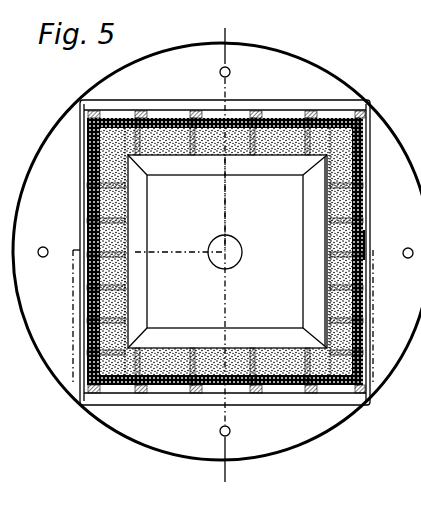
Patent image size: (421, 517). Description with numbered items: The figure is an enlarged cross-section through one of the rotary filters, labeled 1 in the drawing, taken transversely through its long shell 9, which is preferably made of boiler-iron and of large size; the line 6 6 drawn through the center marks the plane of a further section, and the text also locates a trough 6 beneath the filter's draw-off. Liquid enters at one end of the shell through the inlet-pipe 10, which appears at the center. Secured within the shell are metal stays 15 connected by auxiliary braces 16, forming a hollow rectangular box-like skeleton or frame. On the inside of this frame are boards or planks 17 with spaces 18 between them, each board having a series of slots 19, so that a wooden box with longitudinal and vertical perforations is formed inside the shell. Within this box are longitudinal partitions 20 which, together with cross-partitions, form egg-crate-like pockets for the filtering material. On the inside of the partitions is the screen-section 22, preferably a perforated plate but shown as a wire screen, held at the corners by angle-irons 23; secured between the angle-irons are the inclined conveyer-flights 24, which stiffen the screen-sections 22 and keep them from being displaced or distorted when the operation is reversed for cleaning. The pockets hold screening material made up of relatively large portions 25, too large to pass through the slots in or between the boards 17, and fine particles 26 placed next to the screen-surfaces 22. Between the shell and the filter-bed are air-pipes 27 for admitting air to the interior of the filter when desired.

The cylindrical casing 1 is at (349, 66).
The trough 6 is at (225, 256).
The shell 9 is at (165, 68).
The inlet-pipe 10 is at (228, 266).
The metal stays 15 is at (88, 238).
The auxiliary braces 16 is at (272, 101).
The boards or planks 17 is at (88, 178).
The spaces 18 is at (87, 324).
The slots 19 is at (88, 200).
The longitudinal partitions 20 is at (260, 150).
The screen-section 22 is at (129, 208).
The angle-irons 23 is at (152, 178).
The inclined conveyer-flights 24 is at (219, 175).
The relatively large portions 25 is at (362, 244).
The fine particles 26 is at (340, 242).
The air-pipes 27 is at (227, 261).